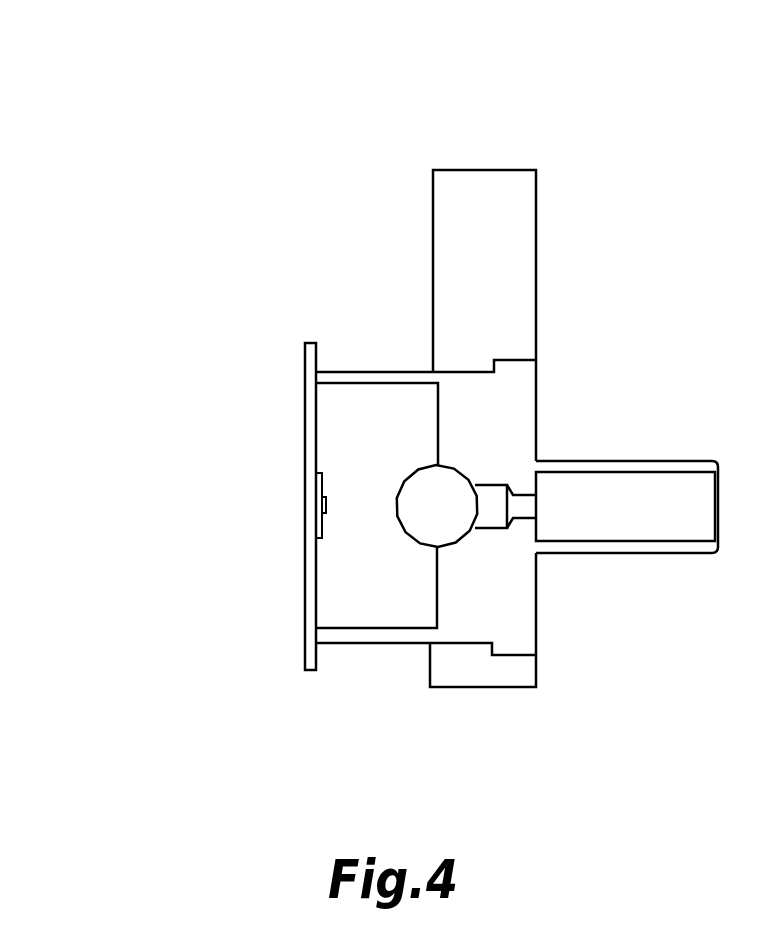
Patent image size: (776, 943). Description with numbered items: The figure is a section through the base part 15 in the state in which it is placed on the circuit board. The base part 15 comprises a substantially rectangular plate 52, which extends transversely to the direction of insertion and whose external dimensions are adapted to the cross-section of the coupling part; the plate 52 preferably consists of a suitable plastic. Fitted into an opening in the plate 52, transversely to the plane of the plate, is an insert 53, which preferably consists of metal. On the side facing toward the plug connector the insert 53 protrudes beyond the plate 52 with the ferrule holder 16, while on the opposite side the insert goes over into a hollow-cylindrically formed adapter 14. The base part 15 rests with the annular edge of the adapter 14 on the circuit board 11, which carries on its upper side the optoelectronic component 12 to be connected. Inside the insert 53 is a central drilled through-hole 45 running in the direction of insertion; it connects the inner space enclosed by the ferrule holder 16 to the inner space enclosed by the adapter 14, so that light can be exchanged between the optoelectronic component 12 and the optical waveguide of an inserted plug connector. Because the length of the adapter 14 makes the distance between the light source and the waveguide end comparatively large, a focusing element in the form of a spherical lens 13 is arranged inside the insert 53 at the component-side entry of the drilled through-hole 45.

The circuit board 11 is at (307, 410).
The optoelectronic component 12 is at (322, 517).
The spherical lens 13 is at (420, 507).
The adapter 14 is at (378, 375).
The base part 15 is at (444, 135).
The ferrule holder 16 is at (653, 527).
The drilled through-hole 45 is at (500, 508).
The plate 52 is at (501, 262).
The insert 53 is at (512, 413).